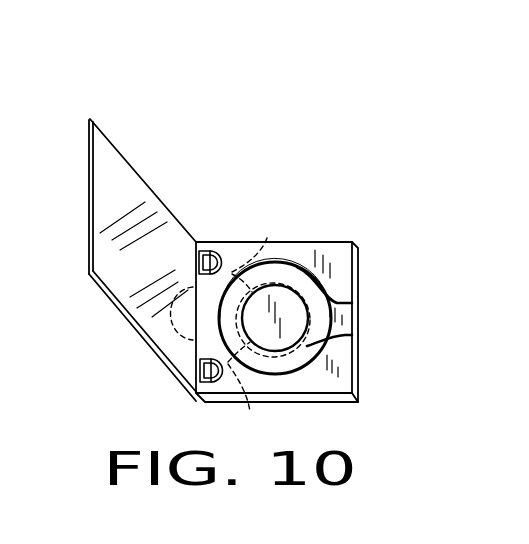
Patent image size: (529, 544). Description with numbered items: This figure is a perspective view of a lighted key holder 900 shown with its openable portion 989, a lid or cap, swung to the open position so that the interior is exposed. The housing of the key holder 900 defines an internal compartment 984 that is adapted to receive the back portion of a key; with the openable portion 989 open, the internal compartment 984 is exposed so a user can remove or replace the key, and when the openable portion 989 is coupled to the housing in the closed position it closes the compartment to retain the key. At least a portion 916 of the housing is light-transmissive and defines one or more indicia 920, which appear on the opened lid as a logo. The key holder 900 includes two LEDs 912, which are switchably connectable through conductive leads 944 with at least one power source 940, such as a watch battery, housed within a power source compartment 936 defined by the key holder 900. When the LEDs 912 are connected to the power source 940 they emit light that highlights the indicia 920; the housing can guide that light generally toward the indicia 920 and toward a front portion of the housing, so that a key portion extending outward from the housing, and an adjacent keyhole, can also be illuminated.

The lighted key holder 900 is at (160, 141).
The openable portion 989 is at (88, 172).
The indicia 920 is at (130, 241).
The light-transmissive portion 916 is at (145, 268).
The LEDs 912 is at (211, 252).
The conductive leads 944 is at (267, 238).
The internal compartment 984 is at (292, 277).
The power source 940 is at (292, 314).
The power source compartment 936 is at (308, 352).